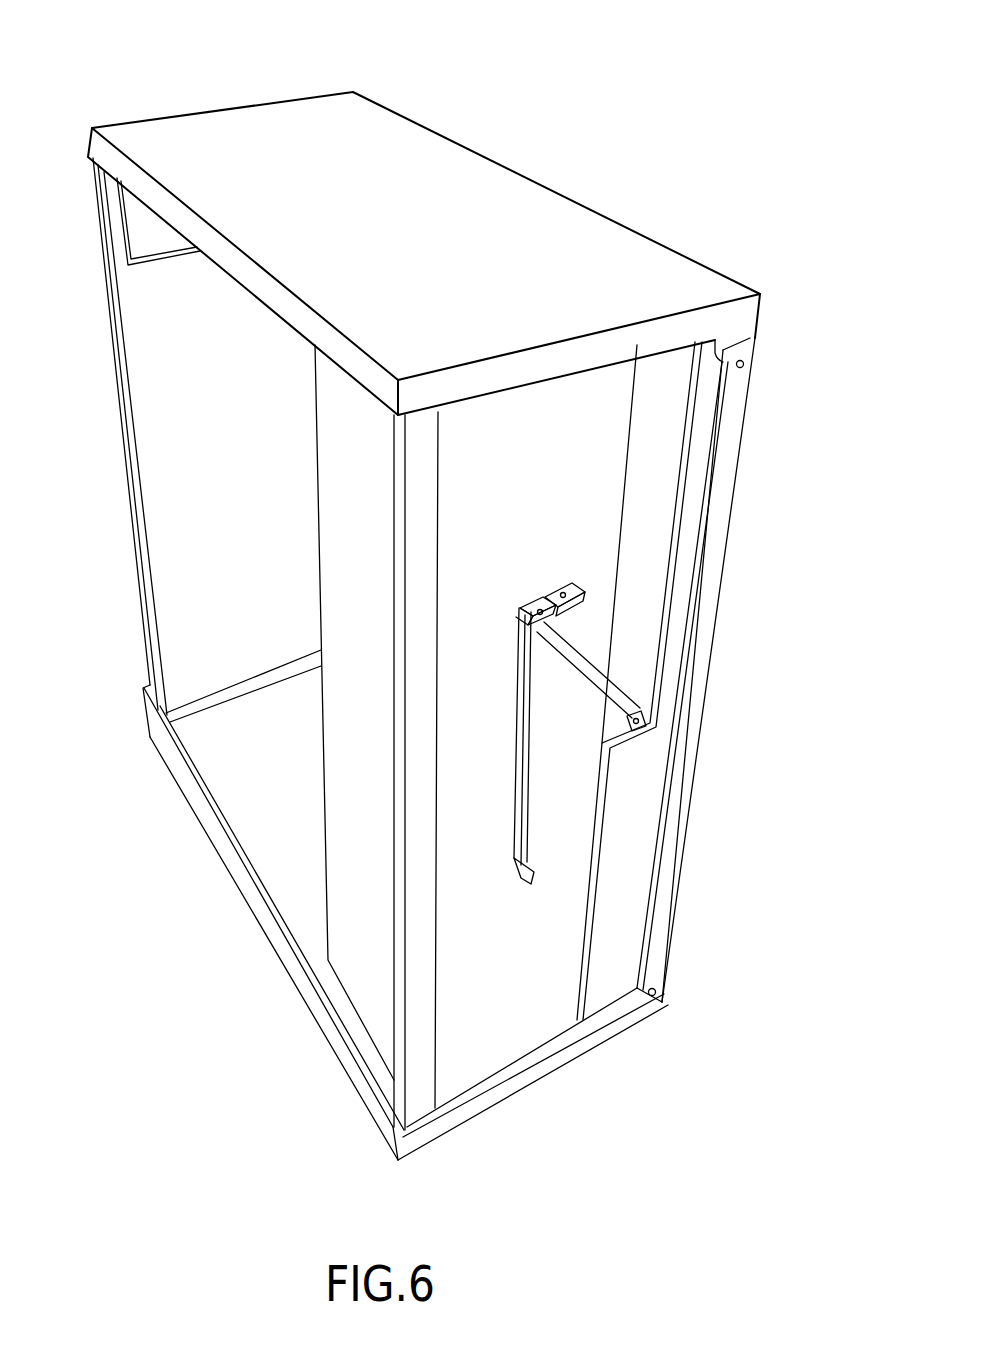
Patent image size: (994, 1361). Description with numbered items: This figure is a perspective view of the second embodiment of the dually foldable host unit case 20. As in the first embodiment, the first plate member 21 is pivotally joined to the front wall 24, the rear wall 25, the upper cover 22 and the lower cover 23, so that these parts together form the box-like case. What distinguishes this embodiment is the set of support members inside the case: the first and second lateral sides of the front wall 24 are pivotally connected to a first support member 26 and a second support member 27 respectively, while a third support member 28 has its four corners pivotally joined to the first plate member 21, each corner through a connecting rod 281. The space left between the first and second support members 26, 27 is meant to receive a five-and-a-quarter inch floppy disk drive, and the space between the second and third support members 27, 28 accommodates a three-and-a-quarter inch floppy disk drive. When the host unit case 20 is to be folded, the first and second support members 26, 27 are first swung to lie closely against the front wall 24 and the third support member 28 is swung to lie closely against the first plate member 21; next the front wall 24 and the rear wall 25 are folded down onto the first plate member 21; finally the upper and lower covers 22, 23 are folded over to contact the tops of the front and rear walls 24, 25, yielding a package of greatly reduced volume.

The host unit case 20 is at (471, 42).
The first plate member 21 is at (590, 467).
The upper cover 22 is at (537, 215).
The lower cover 23 is at (558, 1053).
The front wall 24 is at (622, 933).
The rear wall 25 is at (167, 588).
The first support member 26 is at (637, 652).
The second support member 27 is at (360, 963).
The third support member 28 is at (680, 733).
The connecting rod 281 is at (573, 597).